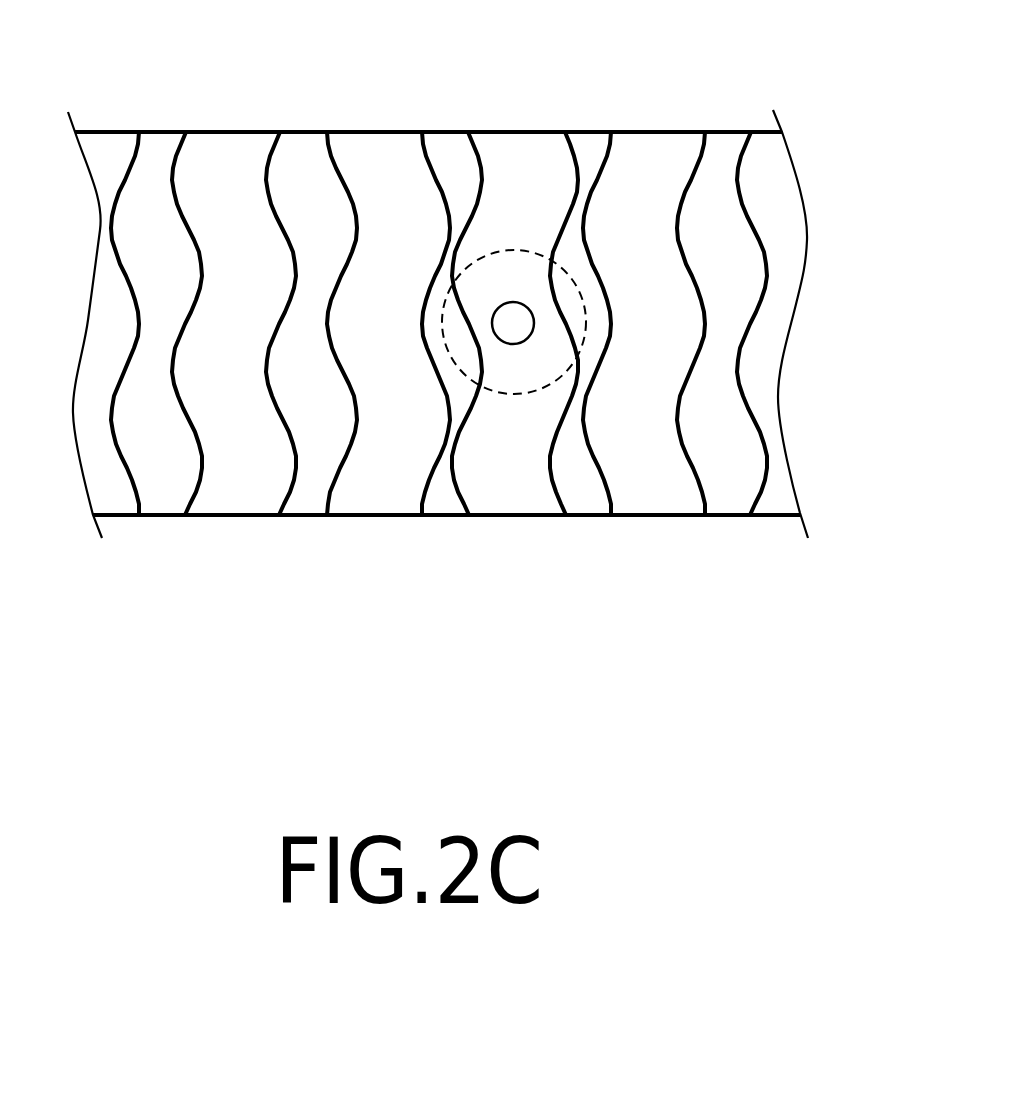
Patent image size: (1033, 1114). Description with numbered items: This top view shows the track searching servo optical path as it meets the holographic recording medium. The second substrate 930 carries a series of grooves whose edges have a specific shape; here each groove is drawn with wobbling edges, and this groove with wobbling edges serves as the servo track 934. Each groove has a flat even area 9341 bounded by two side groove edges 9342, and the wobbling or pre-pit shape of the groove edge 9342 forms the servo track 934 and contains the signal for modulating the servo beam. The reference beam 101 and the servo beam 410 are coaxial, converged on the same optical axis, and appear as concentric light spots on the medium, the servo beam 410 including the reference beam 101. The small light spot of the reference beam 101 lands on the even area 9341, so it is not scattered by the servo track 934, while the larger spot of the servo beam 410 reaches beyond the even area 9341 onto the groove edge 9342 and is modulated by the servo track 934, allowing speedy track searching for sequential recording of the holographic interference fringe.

The second substrate 930 is at (656, 132).
The reference beam 101 is at (504, 302).
The servo beam 410 is at (537, 267).
The servo track 934 is at (582, 492).
The even area 9341 is at (662, 493).
The groove edge 9342 is at (293, 475).